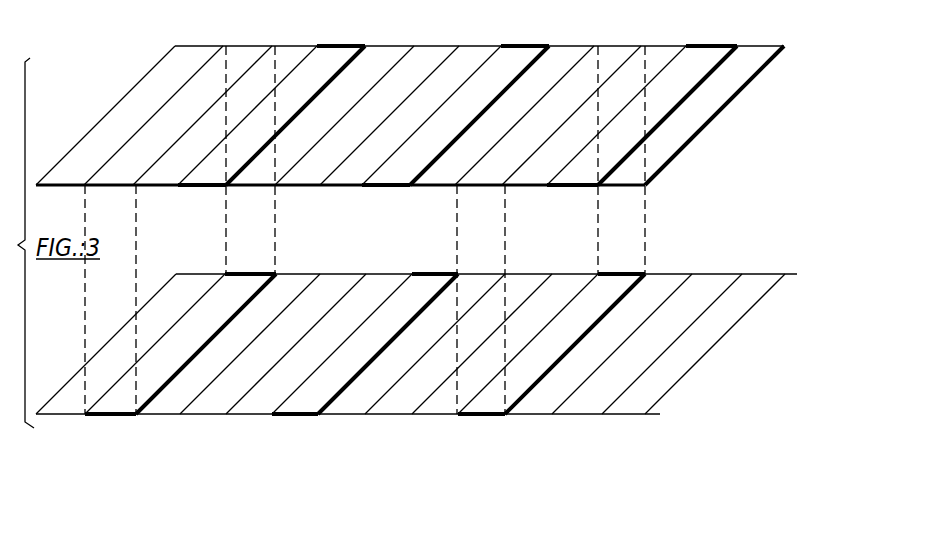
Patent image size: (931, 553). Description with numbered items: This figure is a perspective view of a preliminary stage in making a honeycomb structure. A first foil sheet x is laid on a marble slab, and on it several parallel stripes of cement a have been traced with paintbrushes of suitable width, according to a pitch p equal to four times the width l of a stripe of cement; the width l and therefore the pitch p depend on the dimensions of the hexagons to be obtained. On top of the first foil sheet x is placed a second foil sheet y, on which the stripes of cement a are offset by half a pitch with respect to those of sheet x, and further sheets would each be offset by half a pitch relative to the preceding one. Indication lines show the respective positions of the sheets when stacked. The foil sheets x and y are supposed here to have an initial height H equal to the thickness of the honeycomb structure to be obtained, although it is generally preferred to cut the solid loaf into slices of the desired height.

The stripes of cement a is at (327, 57).
The second foil sheet y is at (660, 148).
The first foil sheet x is at (636, 402).
The initial height H is at (792, 277).
The width of a stripe of cement l is at (85, 414).
The pitch p is at (458, 414).